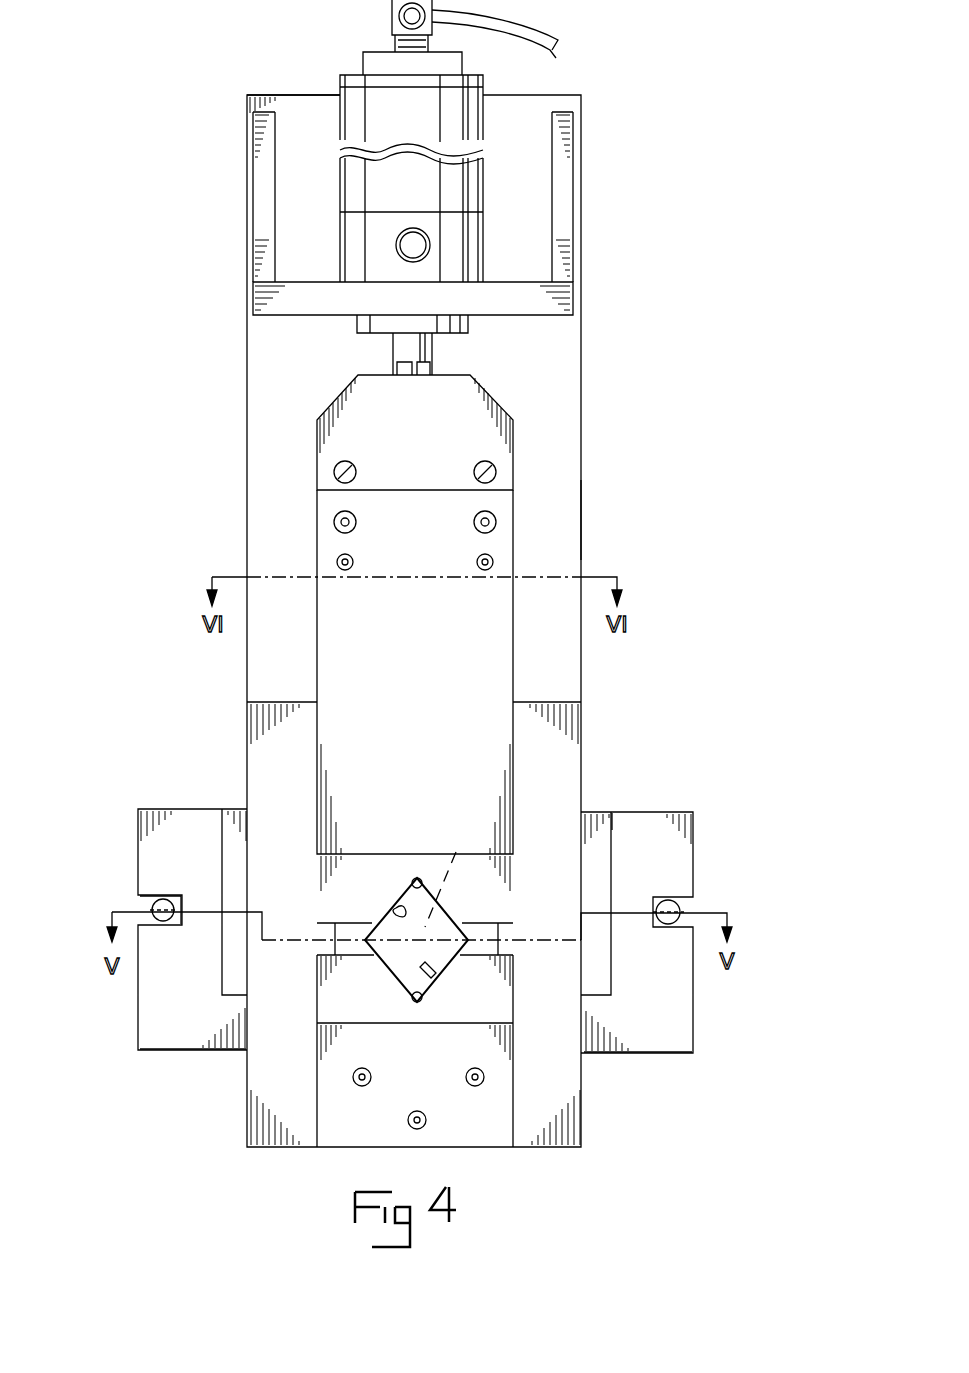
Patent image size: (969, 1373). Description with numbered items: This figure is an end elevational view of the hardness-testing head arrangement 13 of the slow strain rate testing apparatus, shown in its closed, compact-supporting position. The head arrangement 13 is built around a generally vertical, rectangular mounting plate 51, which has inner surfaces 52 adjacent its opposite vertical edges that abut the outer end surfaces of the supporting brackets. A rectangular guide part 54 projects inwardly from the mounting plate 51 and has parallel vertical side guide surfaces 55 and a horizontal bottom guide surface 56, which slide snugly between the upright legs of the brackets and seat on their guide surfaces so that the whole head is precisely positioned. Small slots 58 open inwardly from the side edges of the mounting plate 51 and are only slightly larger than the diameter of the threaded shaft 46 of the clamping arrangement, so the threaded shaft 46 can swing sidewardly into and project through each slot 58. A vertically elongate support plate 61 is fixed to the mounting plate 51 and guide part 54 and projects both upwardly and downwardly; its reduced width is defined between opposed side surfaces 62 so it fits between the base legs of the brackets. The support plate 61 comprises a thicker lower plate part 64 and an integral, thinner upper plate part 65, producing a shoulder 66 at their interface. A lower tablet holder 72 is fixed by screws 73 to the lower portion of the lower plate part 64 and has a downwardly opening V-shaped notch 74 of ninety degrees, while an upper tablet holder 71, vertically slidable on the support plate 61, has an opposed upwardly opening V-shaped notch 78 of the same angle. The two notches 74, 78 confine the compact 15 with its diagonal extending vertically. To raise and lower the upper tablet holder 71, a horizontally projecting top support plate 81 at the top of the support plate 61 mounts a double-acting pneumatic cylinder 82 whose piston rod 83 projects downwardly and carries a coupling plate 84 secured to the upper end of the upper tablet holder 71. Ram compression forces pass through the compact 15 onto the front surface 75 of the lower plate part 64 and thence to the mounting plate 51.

The head arrangement 13 is at (158, 390).
The compact 15 is at (450, 870).
The threaded shaft 46 is at (165, 900).
The mounting plate 51 is at (166, 799).
The inner surfaces 52 is at (192, 1023).
The guide part 54 is at (595, 860).
The side guide surfaces 55 is at (612, 830).
The bottom guide surface 56 is at (597, 1000).
The slots 58 is at (158, 897).
The support plate 61 is at (590, 466).
The side surfaces 62 is at (583, 515).
The lower plate part 64 is at (566, 752).
The upper plate part 65 is at (565, 380).
The shoulder 66 is at (555, 702).
The upper tablet holder 71 is at (340, 665).
The lower tablet holder 72 is at (343, 1007).
The screws 73 is at (484, 1078).
The V-shaped notch 74 is at (437, 968).
The front surface 75 is at (352, 943).
The V-shaped notch 78 is at (396, 908).
The top support plate 81 is at (555, 299).
The pneumatic cylinder 82 is at (465, 186).
The piston rod 83 is at (406, 345).
The coupling plate 84 is at (350, 416).